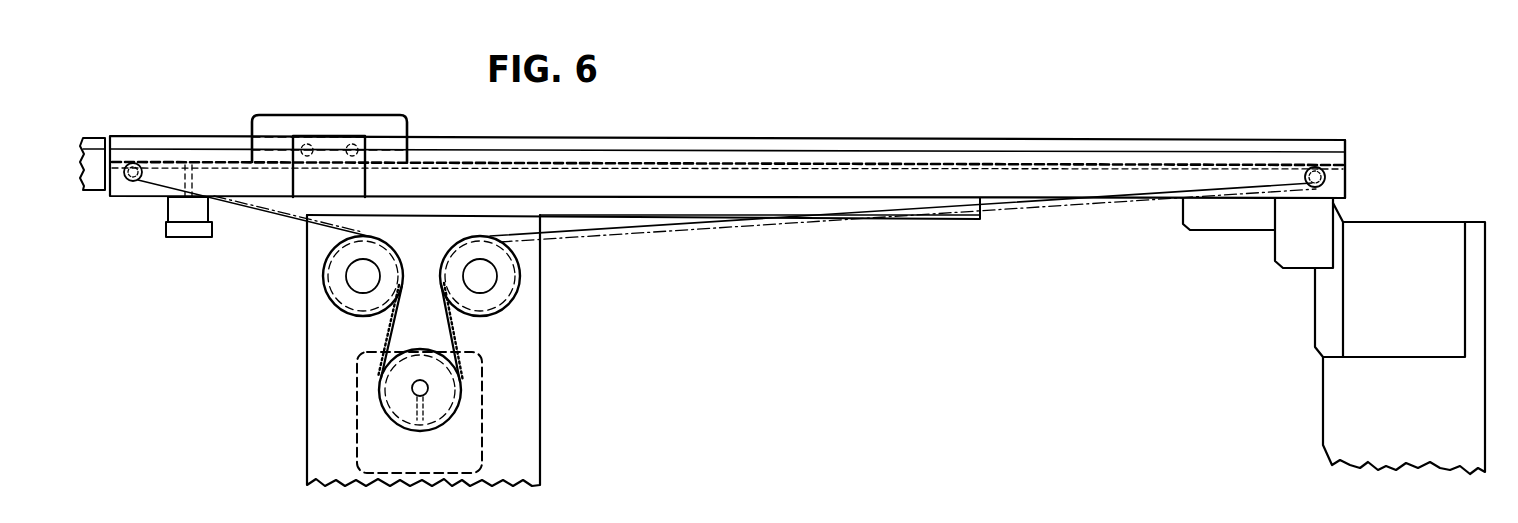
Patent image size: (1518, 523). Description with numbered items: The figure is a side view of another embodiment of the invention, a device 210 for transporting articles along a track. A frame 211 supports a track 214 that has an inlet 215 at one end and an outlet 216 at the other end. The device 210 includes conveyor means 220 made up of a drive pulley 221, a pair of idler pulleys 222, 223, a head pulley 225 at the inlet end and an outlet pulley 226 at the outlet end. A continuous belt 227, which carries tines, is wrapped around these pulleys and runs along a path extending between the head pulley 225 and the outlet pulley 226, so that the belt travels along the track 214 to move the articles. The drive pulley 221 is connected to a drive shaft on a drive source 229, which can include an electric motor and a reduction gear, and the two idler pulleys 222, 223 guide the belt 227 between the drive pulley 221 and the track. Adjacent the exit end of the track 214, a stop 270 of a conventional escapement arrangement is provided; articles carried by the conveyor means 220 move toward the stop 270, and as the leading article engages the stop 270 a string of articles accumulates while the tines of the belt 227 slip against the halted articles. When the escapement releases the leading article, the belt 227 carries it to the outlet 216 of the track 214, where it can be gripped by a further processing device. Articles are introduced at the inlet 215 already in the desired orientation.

The device 210 is at (1030, 134).
The frame 211 is at (532, 302).
The track 214 is at (921, 151).
The inlet 215 is at (1345, 162).
The outlet 216 is at (110, 137).
The conveyor means 220 is at (681, 232).
The drive pulley 221 is at (455, 397).
The idler pulley 222 is at (500, 311).
The idler pulley 223 is at (354, 307).
The head pulley 225 is at (1326, 184).
The outlet pulley 226 is at (132, 183).
The continuous belt 227 is at (440, 297).
The drive source 229 is at (482, 441).
The stop 270 is at (188, 235).